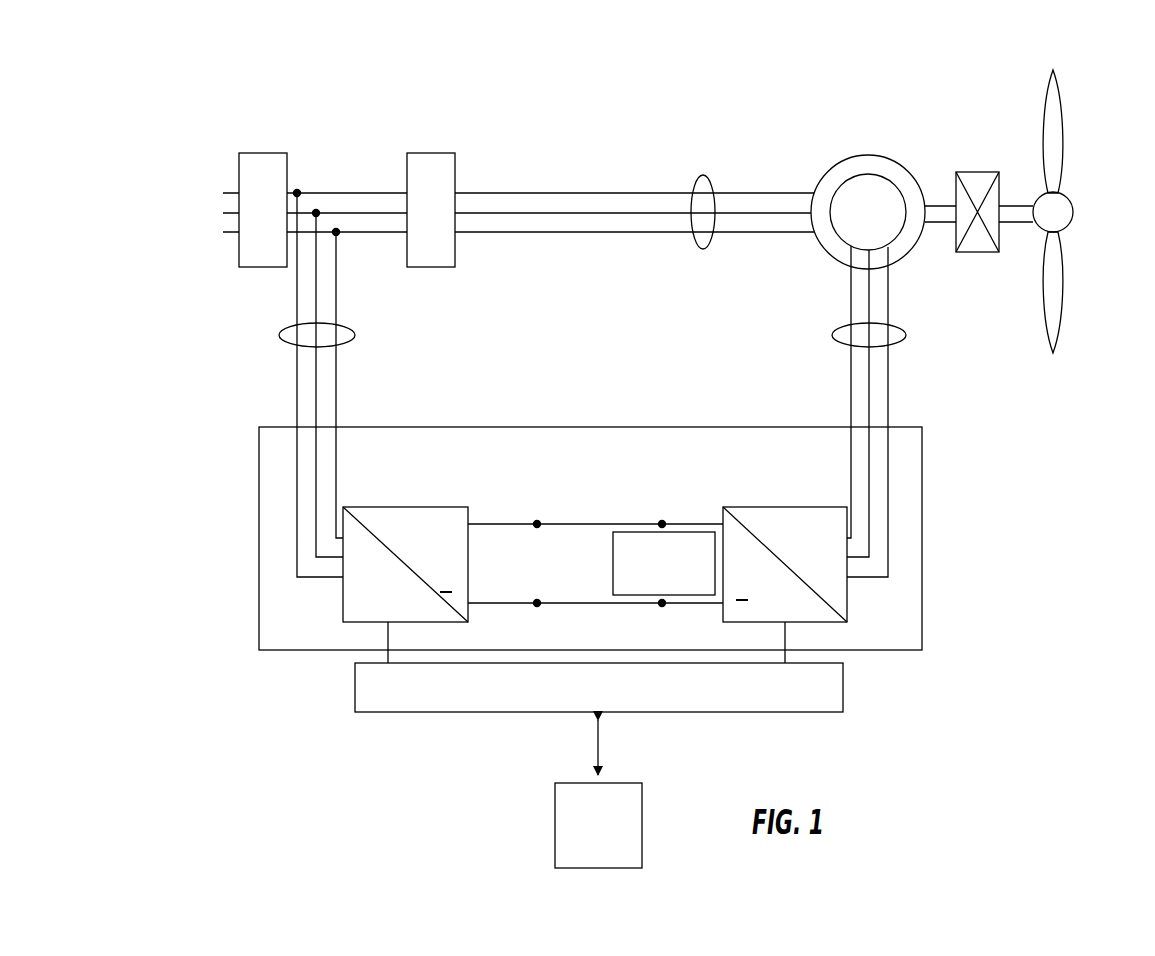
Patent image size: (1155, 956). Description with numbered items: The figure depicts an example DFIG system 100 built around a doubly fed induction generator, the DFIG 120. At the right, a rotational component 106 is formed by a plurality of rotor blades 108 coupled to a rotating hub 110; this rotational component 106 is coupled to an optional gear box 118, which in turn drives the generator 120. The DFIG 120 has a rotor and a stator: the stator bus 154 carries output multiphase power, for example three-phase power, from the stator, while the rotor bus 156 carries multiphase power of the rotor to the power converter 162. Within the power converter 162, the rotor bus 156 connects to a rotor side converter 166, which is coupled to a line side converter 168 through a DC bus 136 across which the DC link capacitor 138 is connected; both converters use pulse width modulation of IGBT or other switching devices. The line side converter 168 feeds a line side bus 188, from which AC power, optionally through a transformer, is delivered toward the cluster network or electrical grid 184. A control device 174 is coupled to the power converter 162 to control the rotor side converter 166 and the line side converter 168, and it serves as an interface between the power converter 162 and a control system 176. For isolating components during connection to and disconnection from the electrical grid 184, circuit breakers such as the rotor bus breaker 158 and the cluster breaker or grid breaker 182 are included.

The DFIG system 100 is at (932, 46).
The rotational component 106 is at (1082, 194).
The rotor blades 108 is at (1065, 152).
The rotating hub 110 is at (1074, 212).
The gear box 118 is at (966, 172).
The DFIG 120 is at (877, 157).
The DC bus 136 is at (590, 524).
The DC link capacitor 138 is at (695, 524).
The stator bus 154 is at (707, 178).
The rotor bus 156 is at (835, 340).
The rotor bus breaker 158 is at (425, 153).
The power converter 162 is at (922, 520).
The rotor side converter 166 is at (757, 507).
The line side converter 168 is at (405, 507).
The control device 174 is at (778, 712).
The control system 176 is at (642, 830).
The grid breaker 182 is at (252, 153).
The electrical grid 184 is at (208, 196).
The line side bus 188 is at (355, 335).